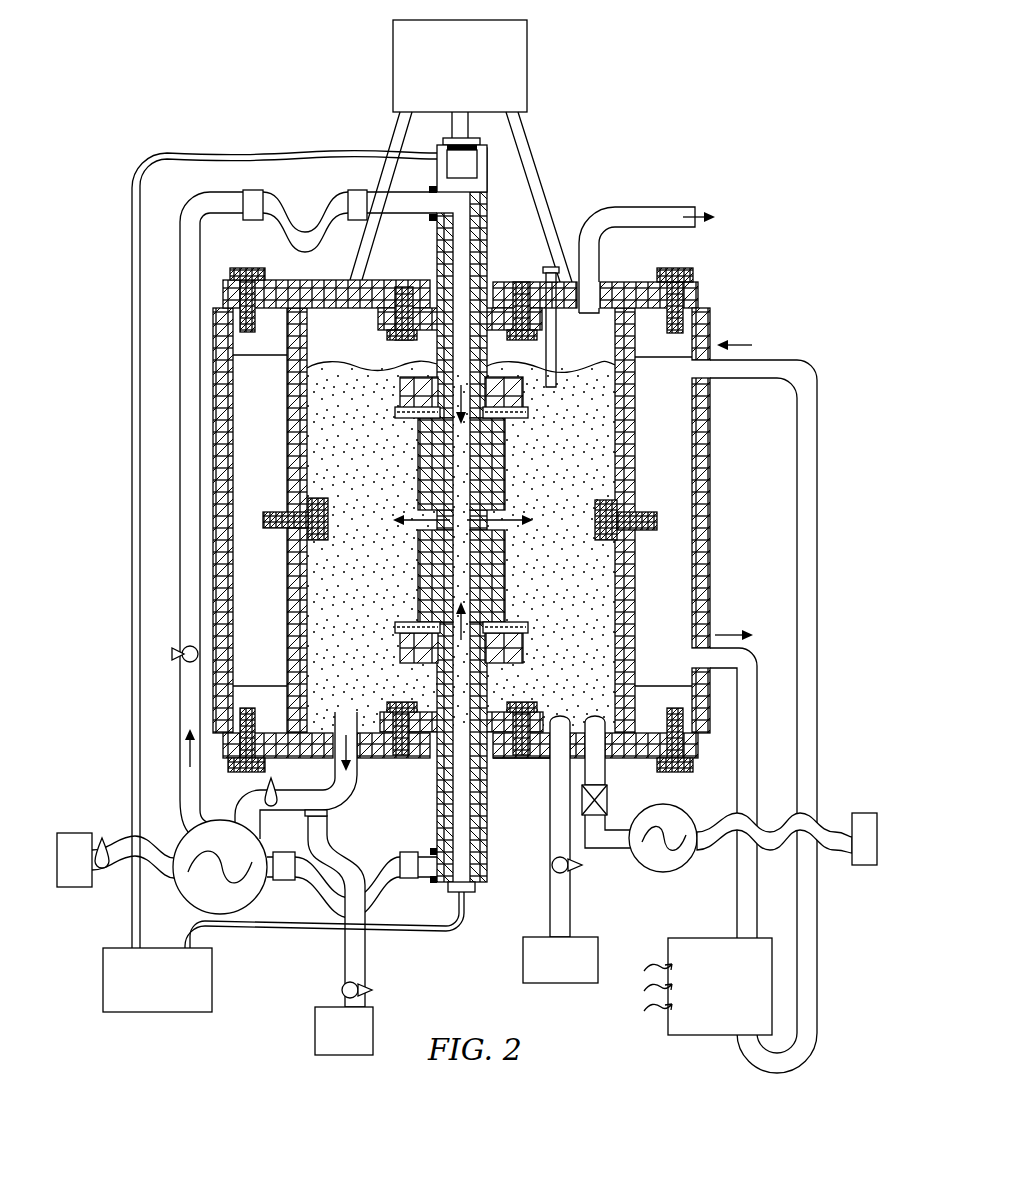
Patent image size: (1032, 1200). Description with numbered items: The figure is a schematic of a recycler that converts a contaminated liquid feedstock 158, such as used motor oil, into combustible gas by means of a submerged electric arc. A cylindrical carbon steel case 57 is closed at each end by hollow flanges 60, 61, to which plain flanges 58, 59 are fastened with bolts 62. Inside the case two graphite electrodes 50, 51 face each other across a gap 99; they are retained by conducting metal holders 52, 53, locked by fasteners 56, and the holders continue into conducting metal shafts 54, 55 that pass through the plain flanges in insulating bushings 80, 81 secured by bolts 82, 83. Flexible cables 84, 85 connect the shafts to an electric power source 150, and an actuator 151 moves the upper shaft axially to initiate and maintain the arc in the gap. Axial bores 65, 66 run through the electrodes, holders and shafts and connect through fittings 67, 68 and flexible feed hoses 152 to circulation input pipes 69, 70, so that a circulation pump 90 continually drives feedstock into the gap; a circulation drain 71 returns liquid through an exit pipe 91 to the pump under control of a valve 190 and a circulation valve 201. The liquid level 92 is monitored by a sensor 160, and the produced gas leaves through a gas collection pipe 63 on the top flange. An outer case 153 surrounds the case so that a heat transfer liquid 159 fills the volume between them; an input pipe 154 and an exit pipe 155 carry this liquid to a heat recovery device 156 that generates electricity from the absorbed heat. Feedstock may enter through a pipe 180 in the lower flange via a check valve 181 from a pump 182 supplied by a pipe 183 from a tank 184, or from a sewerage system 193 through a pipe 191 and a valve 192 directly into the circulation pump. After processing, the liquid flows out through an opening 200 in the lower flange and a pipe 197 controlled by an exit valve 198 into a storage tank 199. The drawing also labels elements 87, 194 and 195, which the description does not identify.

The electrode 50 is at (497, 573).
The electrode 51 is at (496, 456).
The conducting metal holder 52 is at (518, 647).
The conducting metal holder 53 is at (520, 395).
The conducting metal shaft 54 is at (487, 833).
The conducting metal shaft 55 is at (487, 221).
The fastener 56 is at (395, 412).
The case 57 is at (293, 478).
The plain flange 58 is at (290, 280).
The plain flange 59 is at (322, 760).
The hollow flange 60 is at (698, 297).
The hollow flange 61 is at (680, 684).
The bolt 62 is at (243, 268).
The gas collection pipe 63 is at (645, 207).
The bore 65 is at (452, 468).
The bore 66 is at (452, 578).
The fitting 67 is at (432, 850).
The fitting 68 is at (428, 189).
The circulation input pipe 69 is at (238, 194).
The circulation input pipe 70 is at (475, 890).
The circulation drain 71 is at (343, 712).
The insulating bushing 80 is at (596, 714).
The insulating bushing 81 is at (378, 318).
The bolt 82 is at (522, 706).
The bolt 83 is at (556, 346).
The cable 84 is at (245, 932).
The cable 85 is at (265, 151).
The actuator housing 87 is at (487, 189).
The circulation pump 90 is at (265, 845).
The exit pipe 91 is at (328, 814).
The level 92 is at (340, 366).
The gap 99 is at (500, 547).
The electric power source 150 is at (167, 985).
The actuator 151 is at (508, 84).
The feed hose 152 is at (272, 205).
The outer case 153 is at (703, 503).
The input pipe 154 is at (800, 471).
The exit pipe 155 is at (750, 758).
The heat recovery device 156 is at (735, 994).
The liquid feedstock 158 is at (586, 441).
The heat transfer liquid 159 is at (665, 450).
The sensor 160 is at (545, 267).
The pipe 180 is at (622, 672).
The check valve 181 is at (581, 808).
The pump 182 is at (675, 820).
The pipe 183 is at (835, 852).
The tank 184 is at (865, 813).
The valve 190 is at (262, 790).
The pipe 191 is at (165, 866).
The valve 192 is at (102, 838).
The sewerage system 193 is at (90, 870).
The valve 194 is at (378, 992).
The tank 195 is at (328, 1030).
The pipe 197 is at (550, 845).
The exit valve 198 is at (576, 866).
The storage tank 199 is at (567, 983).
The opening 200 is at (538, 760).
The circulation valve 201 is at (175, 660).